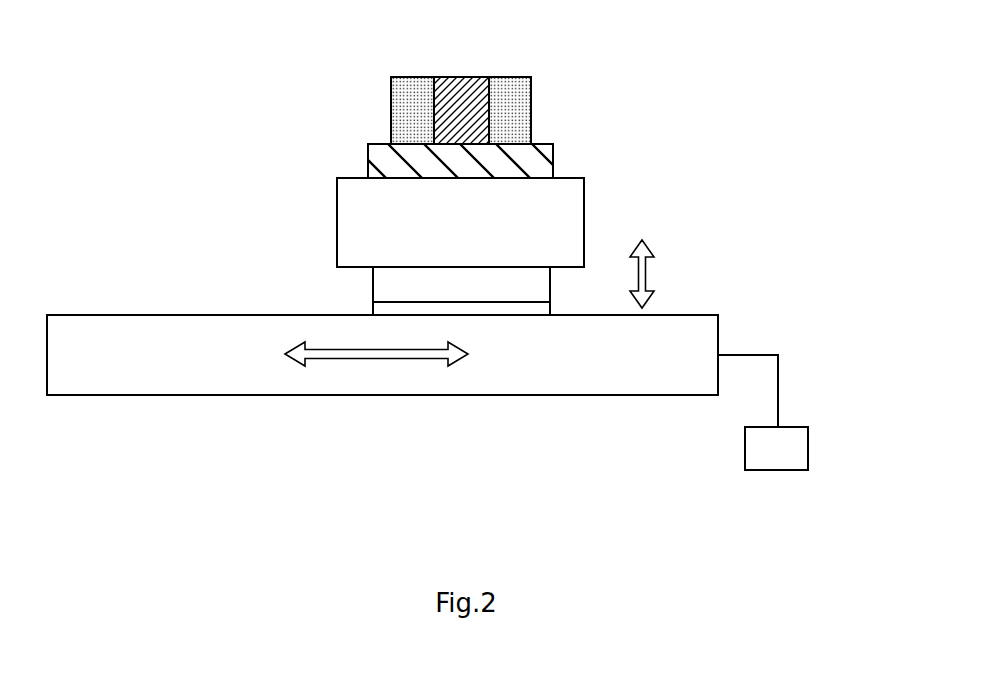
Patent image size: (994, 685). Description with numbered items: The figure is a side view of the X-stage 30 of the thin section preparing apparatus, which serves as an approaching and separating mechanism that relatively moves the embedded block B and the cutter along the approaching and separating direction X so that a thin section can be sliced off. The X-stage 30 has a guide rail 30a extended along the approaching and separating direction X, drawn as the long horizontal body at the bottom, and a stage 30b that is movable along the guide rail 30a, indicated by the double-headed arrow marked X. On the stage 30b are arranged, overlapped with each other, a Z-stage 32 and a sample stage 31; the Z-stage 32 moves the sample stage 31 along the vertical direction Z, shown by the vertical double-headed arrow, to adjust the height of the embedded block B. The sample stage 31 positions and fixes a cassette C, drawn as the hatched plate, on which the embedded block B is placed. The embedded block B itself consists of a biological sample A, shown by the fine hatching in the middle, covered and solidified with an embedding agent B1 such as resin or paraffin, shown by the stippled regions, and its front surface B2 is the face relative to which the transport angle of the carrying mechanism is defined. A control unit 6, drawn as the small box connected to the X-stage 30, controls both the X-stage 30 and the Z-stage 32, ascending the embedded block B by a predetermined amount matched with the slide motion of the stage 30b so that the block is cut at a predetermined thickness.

The biological sample A is at (452, 78).
The embedded block B is at (464, 79).
The embedding agent B1 is at (395, 108).
The front surface of the embedded block B2 is at (531, 103).
The cassette C is at (547, 157).
The X-stage 30 is at (382, 420).
The guide rail 30a is at (500, 375).
The stage 30b is at (537, 312).
The sample stage 31 is at (573, 210).
The Z-stage 32 is at (380, 285).
The control unit 6 is at (798, 447).
The approaching and separating direction X is at (376, 366).
The vertical direction Z is at (654, 274).